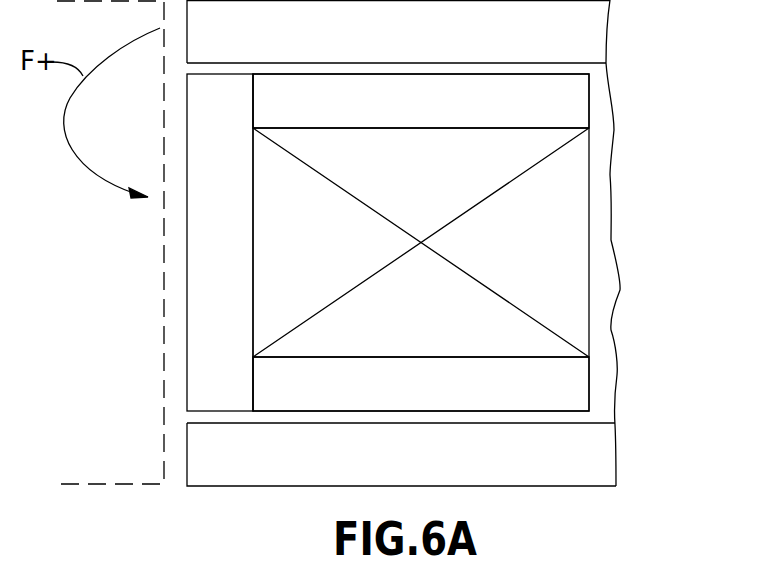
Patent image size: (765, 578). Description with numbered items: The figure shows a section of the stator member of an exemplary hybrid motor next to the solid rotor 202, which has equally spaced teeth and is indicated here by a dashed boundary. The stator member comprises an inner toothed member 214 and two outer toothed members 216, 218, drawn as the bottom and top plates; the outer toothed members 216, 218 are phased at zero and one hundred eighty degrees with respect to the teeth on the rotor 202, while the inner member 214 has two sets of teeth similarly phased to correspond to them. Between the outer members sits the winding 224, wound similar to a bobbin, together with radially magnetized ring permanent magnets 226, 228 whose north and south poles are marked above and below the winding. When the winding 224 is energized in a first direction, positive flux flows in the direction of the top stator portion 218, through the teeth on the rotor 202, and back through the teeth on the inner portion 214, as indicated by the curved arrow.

The solid rotor 202 is at (164, 343).
The inner toothed member 214 is at (197, 244).
The outer toothed member 216 is at (602, 452).
The outer toothed member 218 is at (598, 33).
The winding 224 is at (571, 224).
The radially magnetized ring permanent magnet 226 is at (578, 393).
The radially magnetized ring permanent magnet 228 is at (577, 91).